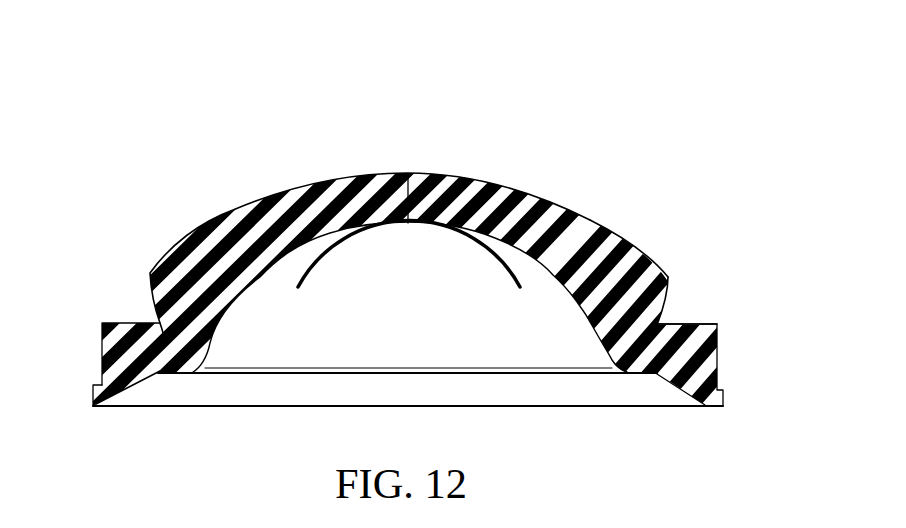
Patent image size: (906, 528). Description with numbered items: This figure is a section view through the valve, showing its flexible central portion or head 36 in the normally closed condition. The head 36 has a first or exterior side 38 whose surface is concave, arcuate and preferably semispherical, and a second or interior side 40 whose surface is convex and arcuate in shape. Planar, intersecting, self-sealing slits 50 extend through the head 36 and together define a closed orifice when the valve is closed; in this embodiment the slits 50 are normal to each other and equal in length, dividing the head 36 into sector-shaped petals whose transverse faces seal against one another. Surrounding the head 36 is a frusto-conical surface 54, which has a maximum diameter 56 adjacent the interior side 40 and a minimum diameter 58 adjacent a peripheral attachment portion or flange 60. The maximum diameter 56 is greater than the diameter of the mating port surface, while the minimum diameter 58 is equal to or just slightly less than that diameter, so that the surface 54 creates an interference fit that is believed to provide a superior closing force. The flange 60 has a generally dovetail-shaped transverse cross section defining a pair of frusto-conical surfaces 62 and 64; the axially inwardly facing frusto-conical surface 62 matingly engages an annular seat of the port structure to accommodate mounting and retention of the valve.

The head 36 is at (233, 209).
The exterior side 38 is at (572, 296).
The interior side 40 is at (547, 202).
The slits 50 is at (412, 192).
The surface 54 is at (665, 304).
The maximum diameter 56 is at (668, 277).
The minimum diameter 58 is at (661, 332).
The flange 60 is at (733, 361).
The frusto-conical surface 62 is at (122, 330).
The frusto-conical surface 64 is at (137, 386).